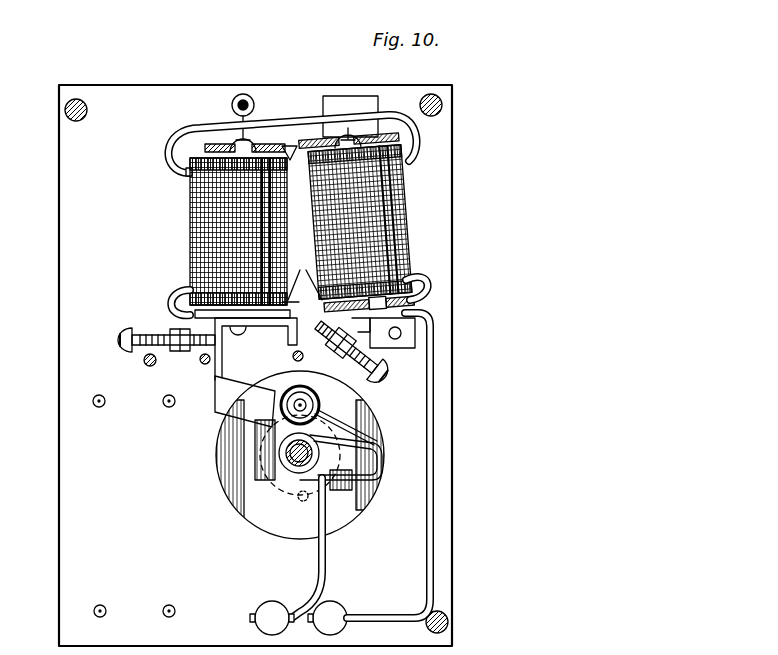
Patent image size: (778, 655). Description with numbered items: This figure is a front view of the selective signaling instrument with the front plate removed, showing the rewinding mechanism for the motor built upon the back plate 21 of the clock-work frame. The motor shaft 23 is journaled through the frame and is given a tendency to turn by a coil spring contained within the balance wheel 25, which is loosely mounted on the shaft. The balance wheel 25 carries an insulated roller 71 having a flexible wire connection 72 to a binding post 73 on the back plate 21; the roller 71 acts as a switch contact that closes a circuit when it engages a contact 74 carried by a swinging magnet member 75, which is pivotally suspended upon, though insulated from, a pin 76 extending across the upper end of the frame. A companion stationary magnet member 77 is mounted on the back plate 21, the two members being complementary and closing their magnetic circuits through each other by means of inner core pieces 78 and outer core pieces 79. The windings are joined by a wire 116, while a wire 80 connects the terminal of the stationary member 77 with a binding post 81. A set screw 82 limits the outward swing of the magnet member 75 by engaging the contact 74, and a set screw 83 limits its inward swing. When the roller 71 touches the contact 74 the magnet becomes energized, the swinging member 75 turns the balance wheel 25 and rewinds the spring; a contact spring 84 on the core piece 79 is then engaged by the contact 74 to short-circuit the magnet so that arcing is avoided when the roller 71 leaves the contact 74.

The back plate 21 is at (59, 530).
The motor shaft 23 is at (293, 470).
The balance wheel 25 is at (230, 500).
The roller 71 is at (313, 397).
The flexible wire connection 72 is at (380, 484).
The binding post 73 is at (272, 600).
The contact 74 is at (215, 414).
The swinging magnet member 75 is at (190, 228).
The pin 76 is at (243, 94).
The stationary magnet member 77 is at (410, 220).
The inner core pieces 78 is at (290, 162).
The outer core pieces 79 is at (302, 273).
The wire 80 is at (426, 462).
The binding post 81 is at (346, 606).
The set screw 82 is at (157, 328).
The set screw 83 is at (373, 358).
The contact spring 84 is at (311, 357).
The wire 116 is at (268, 124).